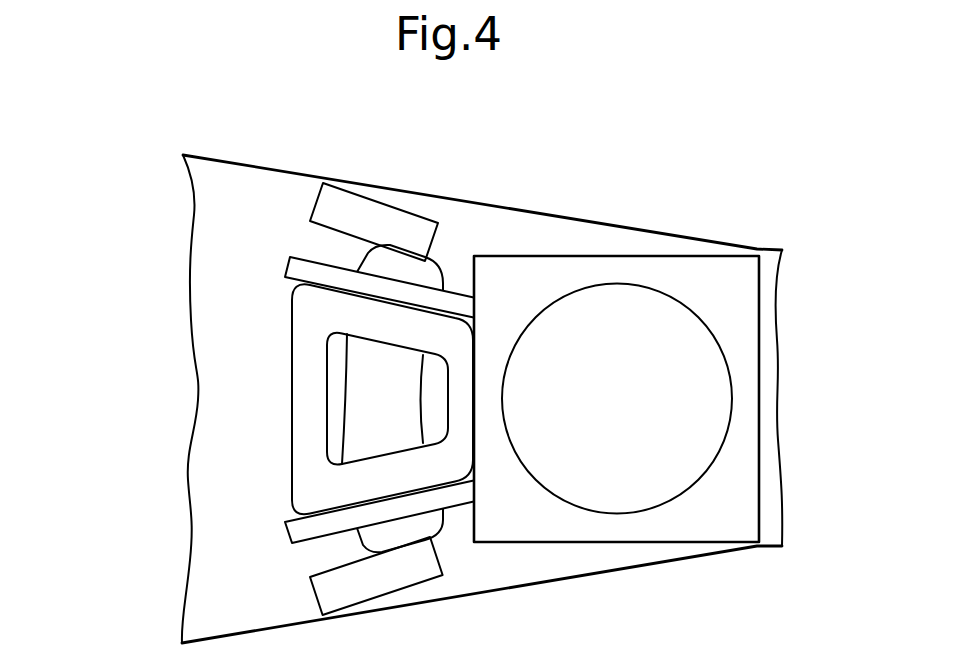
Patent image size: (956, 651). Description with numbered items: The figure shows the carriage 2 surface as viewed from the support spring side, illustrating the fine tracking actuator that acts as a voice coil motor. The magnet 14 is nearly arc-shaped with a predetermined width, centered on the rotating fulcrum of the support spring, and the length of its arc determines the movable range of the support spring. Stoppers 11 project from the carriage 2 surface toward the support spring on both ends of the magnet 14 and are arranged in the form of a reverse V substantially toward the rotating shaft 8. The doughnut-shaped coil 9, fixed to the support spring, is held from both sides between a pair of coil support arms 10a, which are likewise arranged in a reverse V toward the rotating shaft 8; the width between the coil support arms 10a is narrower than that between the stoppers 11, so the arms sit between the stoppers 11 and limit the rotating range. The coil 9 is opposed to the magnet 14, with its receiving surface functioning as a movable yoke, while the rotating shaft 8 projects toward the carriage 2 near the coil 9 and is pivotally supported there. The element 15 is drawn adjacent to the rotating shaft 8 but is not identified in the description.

The carriage 2 is at (268, 185).
The rotating shaft 8 is at (673, 353).
The coil 9 is at (312, 457).
The coil support arm 10a is at (295, 282).
The stopper 11 is at (407, 218).
The magnet 14 is at (362, 254).
The frame plate 15 is at (705, 262).